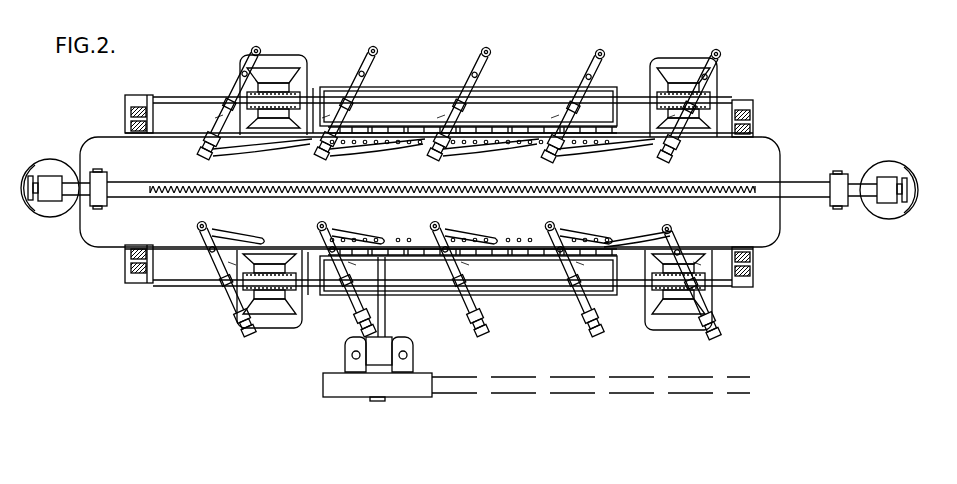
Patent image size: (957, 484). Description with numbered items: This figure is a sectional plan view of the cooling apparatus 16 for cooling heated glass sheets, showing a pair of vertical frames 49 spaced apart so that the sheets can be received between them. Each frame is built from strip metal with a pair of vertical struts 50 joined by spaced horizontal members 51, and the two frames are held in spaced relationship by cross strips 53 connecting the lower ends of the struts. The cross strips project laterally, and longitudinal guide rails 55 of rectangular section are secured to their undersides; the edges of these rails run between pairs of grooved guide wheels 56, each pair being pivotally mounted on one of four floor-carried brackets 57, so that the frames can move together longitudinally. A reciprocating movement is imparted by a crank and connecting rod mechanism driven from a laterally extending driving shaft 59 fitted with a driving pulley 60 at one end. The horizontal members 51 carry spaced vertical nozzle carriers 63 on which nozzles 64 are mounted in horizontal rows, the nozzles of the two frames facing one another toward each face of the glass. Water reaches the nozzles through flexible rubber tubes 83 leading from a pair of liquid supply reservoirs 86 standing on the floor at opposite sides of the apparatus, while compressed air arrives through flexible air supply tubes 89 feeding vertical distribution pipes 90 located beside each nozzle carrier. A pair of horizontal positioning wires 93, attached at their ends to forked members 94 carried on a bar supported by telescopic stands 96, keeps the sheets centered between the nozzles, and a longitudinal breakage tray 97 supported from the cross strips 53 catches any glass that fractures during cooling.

The cooling apparatus 16 is at (163, 96).
The vertical frames 49 is at (754, 125).
The vertical struts 50 is at (127, 117).
The horizontal members 51 is at (481, 138).
The cross strips 53 is at (754, 108).
The guide rails 55 is at (630, 98).
The grooved guide wheels 56 is at (300, 86).
The brackets 57 is at (274, 68).
The driving shaft 59 is at (386, 311).
The driving pulley 60 is at (330, 386).
The nozzle carriers 63 is at (672, 152).
The nozzles 64 is at (306, 151).
The flexible rubber tubes 83 is at (416, 143).
The liquid supply reservoirs 86 is at (503, 95).
The flexible air supply tubes 89 is at (381, 50).
The vertical distribution pipes 90 is at (224, 110).
The horizontal positioning wires 93 is at (137, 182).
The forked members 94 is at (846, 172).
The telescopic stand 96 is at (52, 160).
The breakage tray 97 is at (95, 226).